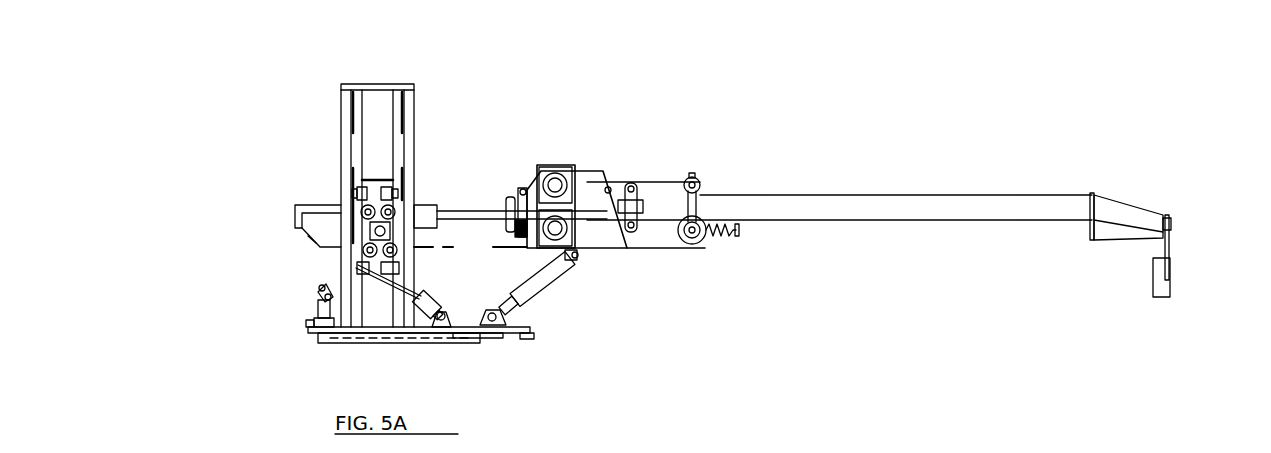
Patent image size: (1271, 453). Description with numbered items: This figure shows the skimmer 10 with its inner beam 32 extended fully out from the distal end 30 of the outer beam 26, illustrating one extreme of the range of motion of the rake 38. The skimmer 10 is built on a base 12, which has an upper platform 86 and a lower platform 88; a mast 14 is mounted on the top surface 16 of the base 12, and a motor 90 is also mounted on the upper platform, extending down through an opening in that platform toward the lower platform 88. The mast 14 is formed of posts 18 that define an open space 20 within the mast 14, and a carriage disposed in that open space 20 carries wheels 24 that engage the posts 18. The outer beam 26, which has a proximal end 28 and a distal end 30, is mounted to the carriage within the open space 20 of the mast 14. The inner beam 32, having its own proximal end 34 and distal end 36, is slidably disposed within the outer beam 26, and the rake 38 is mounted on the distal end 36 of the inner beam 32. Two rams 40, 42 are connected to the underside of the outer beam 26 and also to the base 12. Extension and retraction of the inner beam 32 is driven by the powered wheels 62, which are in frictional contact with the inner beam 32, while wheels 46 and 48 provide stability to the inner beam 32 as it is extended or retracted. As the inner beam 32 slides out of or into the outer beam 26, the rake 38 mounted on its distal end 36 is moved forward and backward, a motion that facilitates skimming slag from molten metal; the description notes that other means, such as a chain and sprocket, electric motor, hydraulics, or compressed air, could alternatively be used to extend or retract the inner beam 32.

The skimmer 10 is at (295, 59).
The base 12 is at (345, 345).
The mast 14 is at (341, 145).
The top surface 16 is at (478, 322).
The posts 18 is at (415, 112).
The open space 20 is at (377, 118).
The wheels 24 is at (395, 253).
The outer beam 26 is at (660, 232).
The proximal end 28 is at (318, 245).
The distal end 30 is at (705, 245).
The inner beam 32 is at (893, 193).
The proximal end 34 is at (507, 200).
The distal end 36 is at (1090, 235).
The rake 38 is at (1170, 285).
The ram 40 is at (542, 287).
The ram 42 is at (400, 296).
The wheel 46 is at (698, 180).
The wheel 48 is at (633, 182).
The powered wheels 62 is at (550, 165).
The upper platform 86 is at (487, 329).
The lower platform 88 is at (470, 338).
The motor 90 is at (313, 296).